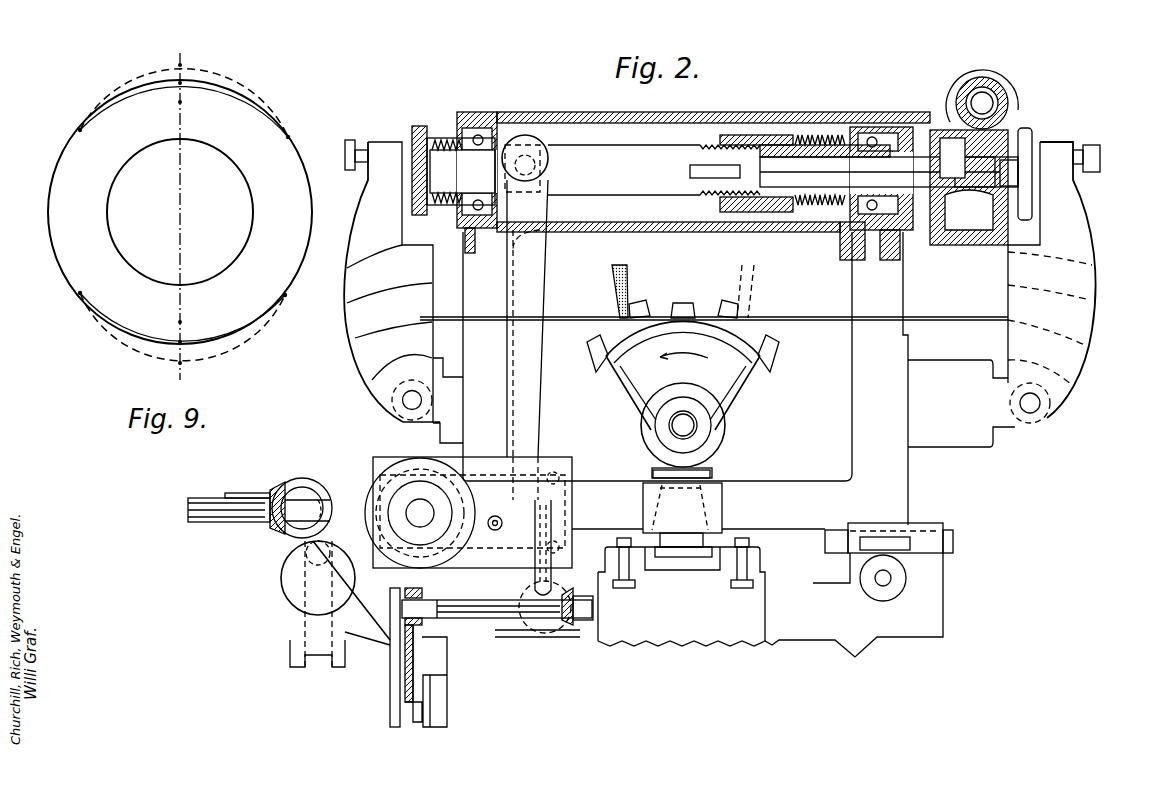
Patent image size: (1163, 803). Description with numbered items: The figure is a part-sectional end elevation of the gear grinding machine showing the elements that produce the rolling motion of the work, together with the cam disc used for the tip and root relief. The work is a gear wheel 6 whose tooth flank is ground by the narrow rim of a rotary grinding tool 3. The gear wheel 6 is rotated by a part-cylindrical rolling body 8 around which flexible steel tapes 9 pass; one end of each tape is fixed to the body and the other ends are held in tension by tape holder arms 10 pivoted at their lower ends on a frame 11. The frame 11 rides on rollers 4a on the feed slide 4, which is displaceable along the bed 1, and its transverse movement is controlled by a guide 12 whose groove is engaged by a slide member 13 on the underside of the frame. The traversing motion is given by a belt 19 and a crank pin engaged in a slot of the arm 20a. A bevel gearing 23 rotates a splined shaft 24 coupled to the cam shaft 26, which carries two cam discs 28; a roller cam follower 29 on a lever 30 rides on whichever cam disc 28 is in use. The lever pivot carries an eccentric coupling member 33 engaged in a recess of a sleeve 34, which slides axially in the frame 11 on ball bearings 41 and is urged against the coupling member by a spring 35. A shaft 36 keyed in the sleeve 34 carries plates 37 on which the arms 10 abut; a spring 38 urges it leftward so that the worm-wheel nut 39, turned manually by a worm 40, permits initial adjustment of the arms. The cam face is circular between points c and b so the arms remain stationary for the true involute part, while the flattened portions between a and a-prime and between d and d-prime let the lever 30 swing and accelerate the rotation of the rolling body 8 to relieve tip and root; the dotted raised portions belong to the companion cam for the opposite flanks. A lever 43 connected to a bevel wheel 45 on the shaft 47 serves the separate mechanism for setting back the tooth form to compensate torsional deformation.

In FIG. 2, the bed 1 is at (762, 617).
In FIG. 2, the rotary grinding tool 3 is at (628, 278).
In FIG. 2, the slide 4 is at (940, 610).
In FIG. 2, the rollers 4a is at (906, 578).
In FIG. 2, the gear wheel 6 is at (690, 308).
In FIG. 2, the rolling body 8 is at (740, 410).
In FIG. 2, the flexible steel tapes 9 is at (812, 317).
In FIG. 2, the arms 10 is at (348, 290).
In FIG. 2, the frame 11 is at (852, 422).
In FIG. 2, the guide 12 is at (683, 582).
In FIG. 2, the slide member 13 is at (688, 552).
In FIG. 2, the belt 19 is at (392, 645).
In FIG. 2, the arm 20a is at (285, 578).
In FIG. 2, the bevel gearing 23 is at (276, 496).
In FIG. 2, the splined shaft 24 is at (200, 522).
In FIG. 2, the cam shaft 26 is at (422, 500).
In FIG. 9, the cam disc 28 is at (263, 232).
In FIG. 2, the cam disc 28 is at (375, 473).
In FIG. 2, the roller cam follower 29 is at (495, 514).
In FIG. 2, the lever 30 is at (546, 394).
In FIG. 2, the coupling member 33 is at (540, 168).
In FIG. 2, the sleeve 34 is at (645, 172).
In FIG. 2, the spring 35 is at (812, 135).
In FIG. 2, the shaft 36 is at (873, 172).
In FIG. 2, the plates 37 is at (418, 126).
In FIG. 2, the spring 38 is at (440, 152).
In FIG. 2, the nut 39 is at (1032, 136).
In FIG. 2, the worm 40 is at (976, 100).
In FIG. 2, the ball bearings 41 is at (480, 116).
In FIG. 2, the lever 43 is at (535, 574).
In FIG. 2, the bevel wheel 45 is at (540, 630).
In FIG. 2, the shaft 47 is at (462, 600).